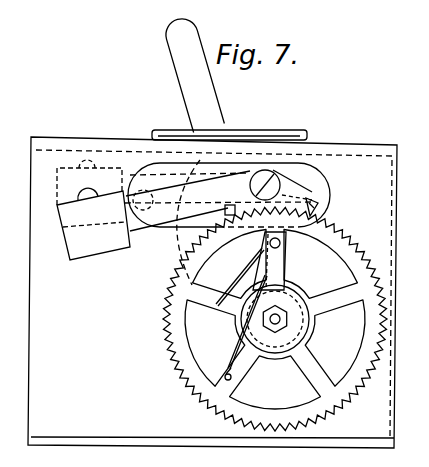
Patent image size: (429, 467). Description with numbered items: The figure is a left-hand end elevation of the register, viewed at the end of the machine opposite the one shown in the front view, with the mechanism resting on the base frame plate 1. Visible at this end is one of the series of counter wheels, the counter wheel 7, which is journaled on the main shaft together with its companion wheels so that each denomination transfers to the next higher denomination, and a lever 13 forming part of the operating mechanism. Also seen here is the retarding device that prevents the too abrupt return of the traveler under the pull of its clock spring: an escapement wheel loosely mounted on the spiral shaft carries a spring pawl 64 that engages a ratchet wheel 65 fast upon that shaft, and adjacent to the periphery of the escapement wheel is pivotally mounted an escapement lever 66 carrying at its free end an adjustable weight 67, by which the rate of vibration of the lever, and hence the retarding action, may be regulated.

The base frame plate 1 is at (357, 431).
The counter wheel 7 is at (342, 156).
The lever 13 is at (207, 89).
The spring pawl 64 is at (251, 306).
The ratchet wheel 65 is at (174, 364).
The escapement lever 66 is at (227, 222).
The adjustable weight 67 is at (90, 220).